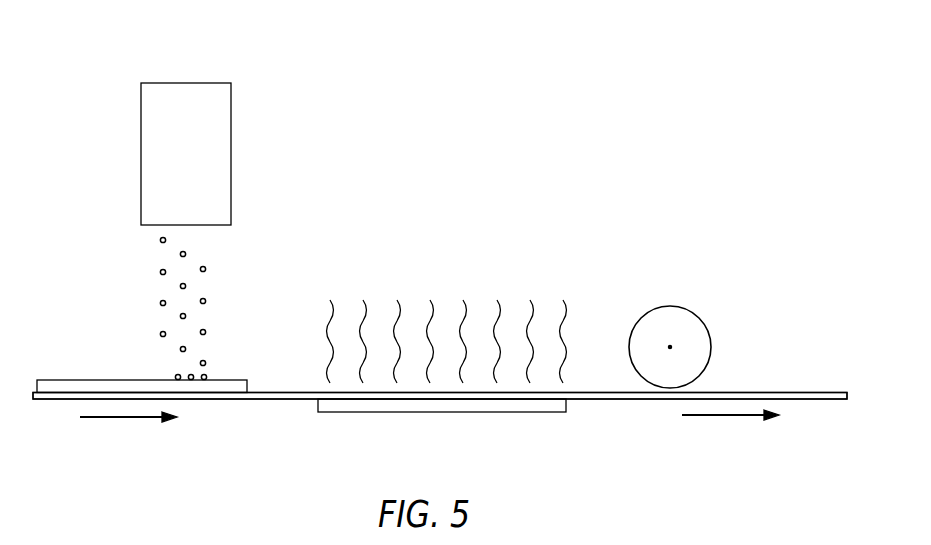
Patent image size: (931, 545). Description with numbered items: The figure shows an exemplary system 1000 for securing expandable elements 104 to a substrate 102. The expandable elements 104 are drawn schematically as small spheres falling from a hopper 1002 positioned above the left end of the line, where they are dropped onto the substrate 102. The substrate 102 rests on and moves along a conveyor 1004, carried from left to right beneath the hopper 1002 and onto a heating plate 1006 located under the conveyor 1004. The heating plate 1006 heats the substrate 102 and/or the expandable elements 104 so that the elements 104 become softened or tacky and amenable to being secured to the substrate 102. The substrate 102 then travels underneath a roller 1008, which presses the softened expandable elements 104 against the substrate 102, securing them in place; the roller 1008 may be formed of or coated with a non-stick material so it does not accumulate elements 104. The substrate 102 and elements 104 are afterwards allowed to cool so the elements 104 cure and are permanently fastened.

The system 1000 is at (544, 74).
The hopper 1002 is at (199, 90).
The expandable elements 104 is at (207, 377).
The substrate 102 is at (68, 383).
The conveyor 1004 is at (300, 399).
The heating plate 1006 is at (440, 412).
The roller 1008 is at (672, 320).